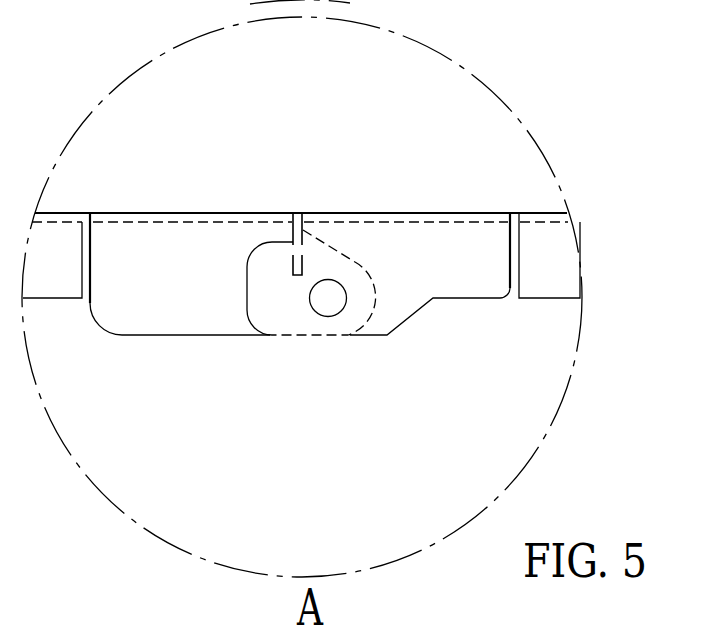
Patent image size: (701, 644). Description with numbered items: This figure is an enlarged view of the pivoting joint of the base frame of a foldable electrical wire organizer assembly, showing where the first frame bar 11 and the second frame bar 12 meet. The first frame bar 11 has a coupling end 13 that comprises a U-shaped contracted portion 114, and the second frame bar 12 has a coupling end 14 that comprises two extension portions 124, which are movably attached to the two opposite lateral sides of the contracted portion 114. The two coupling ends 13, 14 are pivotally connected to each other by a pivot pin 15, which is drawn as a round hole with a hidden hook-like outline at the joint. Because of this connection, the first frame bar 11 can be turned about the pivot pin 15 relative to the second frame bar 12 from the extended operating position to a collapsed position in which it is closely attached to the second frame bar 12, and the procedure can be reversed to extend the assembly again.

The first frame bar 11 is at (60, 213).
The second frame bar 12 is at (539, 213).
The U-shaped contracted portion 114 is at (167, 245).
The extension portion 124 is at (417, 247).
The coupling end 13 is at (293, 215).
The coupling end 14 is at (303, 230).
The pivot pin 15 is at (328, 298).